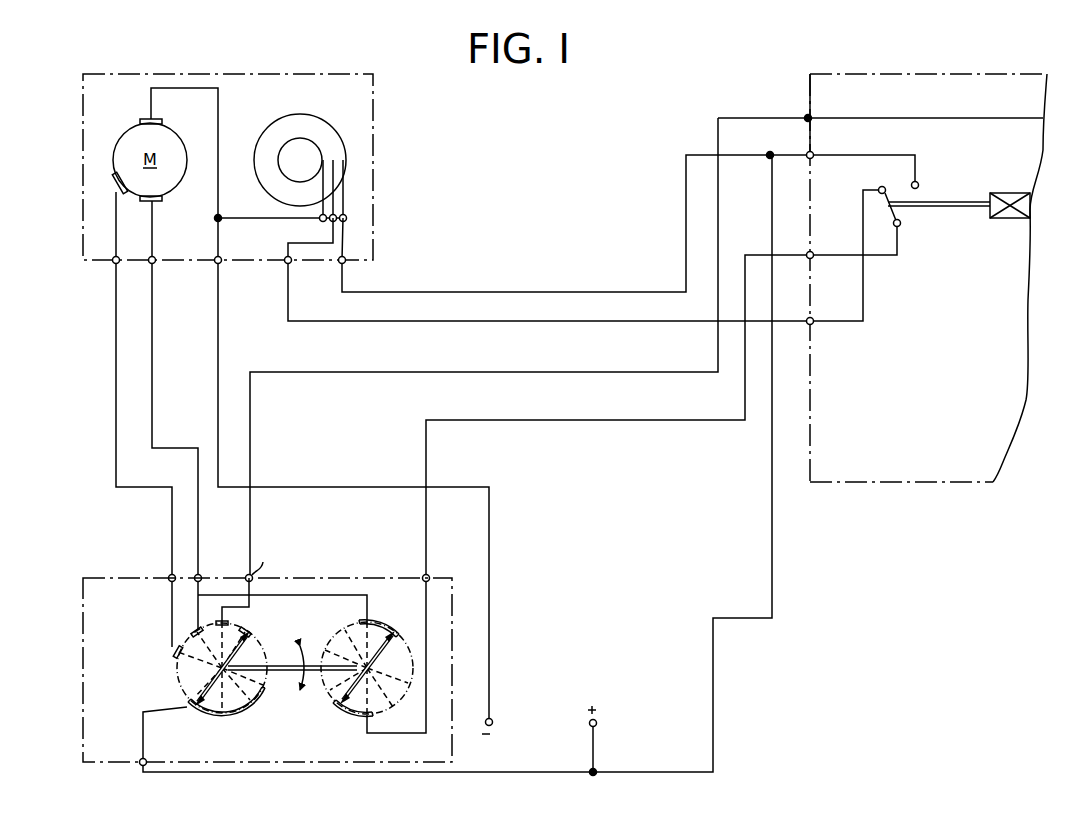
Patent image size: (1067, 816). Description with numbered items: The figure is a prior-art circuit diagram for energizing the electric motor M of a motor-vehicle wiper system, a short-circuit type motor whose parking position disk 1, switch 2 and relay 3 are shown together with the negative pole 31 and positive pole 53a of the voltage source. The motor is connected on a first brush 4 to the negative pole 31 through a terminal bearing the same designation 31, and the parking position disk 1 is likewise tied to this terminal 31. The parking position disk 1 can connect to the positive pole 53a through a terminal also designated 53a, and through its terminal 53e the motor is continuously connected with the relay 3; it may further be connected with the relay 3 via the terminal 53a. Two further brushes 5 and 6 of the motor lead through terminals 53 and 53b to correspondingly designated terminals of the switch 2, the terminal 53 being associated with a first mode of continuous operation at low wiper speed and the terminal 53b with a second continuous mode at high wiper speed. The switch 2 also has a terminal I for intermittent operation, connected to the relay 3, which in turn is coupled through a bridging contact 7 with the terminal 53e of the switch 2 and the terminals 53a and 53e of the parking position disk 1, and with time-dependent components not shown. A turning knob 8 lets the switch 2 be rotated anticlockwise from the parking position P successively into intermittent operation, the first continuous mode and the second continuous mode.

The parking position disk 1 is at (338, 128).
The switch 2 is at (83, 705).
The relay 3 is at (1028, 206).
The first brush 4 is at (162, 120).
The brush 5 is at (160, 201).
The brush 6 is at (114, 178).
The bridging contact 7 is at (888, 196).
The turning knob 8 is at (178, 680).
The negative pole 31 is at (216, 264).
The terminal 53 is at (154, 266).
The positive pole 53a is at (340, 264).
The terminal 53b is at (115, 266).
The terminal 53e is at (286, 264).